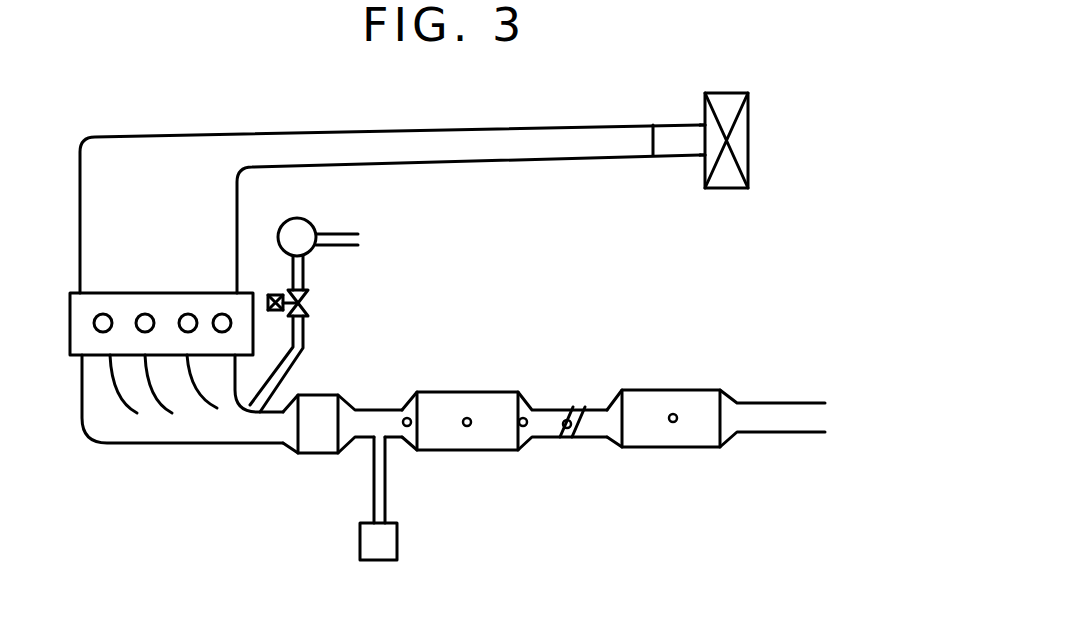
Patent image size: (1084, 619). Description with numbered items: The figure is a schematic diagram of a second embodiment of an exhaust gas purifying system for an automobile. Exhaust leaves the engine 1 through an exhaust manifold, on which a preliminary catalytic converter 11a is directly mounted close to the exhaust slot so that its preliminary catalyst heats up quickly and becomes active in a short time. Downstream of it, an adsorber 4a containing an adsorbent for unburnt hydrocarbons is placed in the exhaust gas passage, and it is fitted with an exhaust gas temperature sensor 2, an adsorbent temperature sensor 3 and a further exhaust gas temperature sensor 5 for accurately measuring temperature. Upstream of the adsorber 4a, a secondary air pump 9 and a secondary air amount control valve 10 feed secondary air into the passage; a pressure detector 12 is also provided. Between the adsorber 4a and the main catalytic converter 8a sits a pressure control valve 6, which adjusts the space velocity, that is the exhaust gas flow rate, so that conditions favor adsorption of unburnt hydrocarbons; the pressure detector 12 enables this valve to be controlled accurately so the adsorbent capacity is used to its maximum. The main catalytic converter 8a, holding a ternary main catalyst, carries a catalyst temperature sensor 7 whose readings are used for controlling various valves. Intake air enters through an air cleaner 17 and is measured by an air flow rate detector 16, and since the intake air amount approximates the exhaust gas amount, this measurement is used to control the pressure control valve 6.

The engine 1 is at (168, 303).
The exhaust gas temperature sensor 2 is at (405, 415).
The adsorbent temperature sensor 3 is at (466, 417).
The adsorber 4a is at (474, 452).
The exhaust gas temperature sensor 5 is at (524, 417).
The pressure control valve 6 is at (567, 410).
The catalyst temperature sensor 7 is at (673, 414).
The main catalytic converter 8a is at (697, 436).
The secondary air pump 9 is at (297, 228).
The secondary air amount control valve 10 is at (311, 303).
The preliminary catalytic converter 11a is at (317, 440).
The pressure detector 12 is at (387, 545).
The air flow rate detector 16 is at (675, 148).
The air cleaner 17 is at (727, 188).